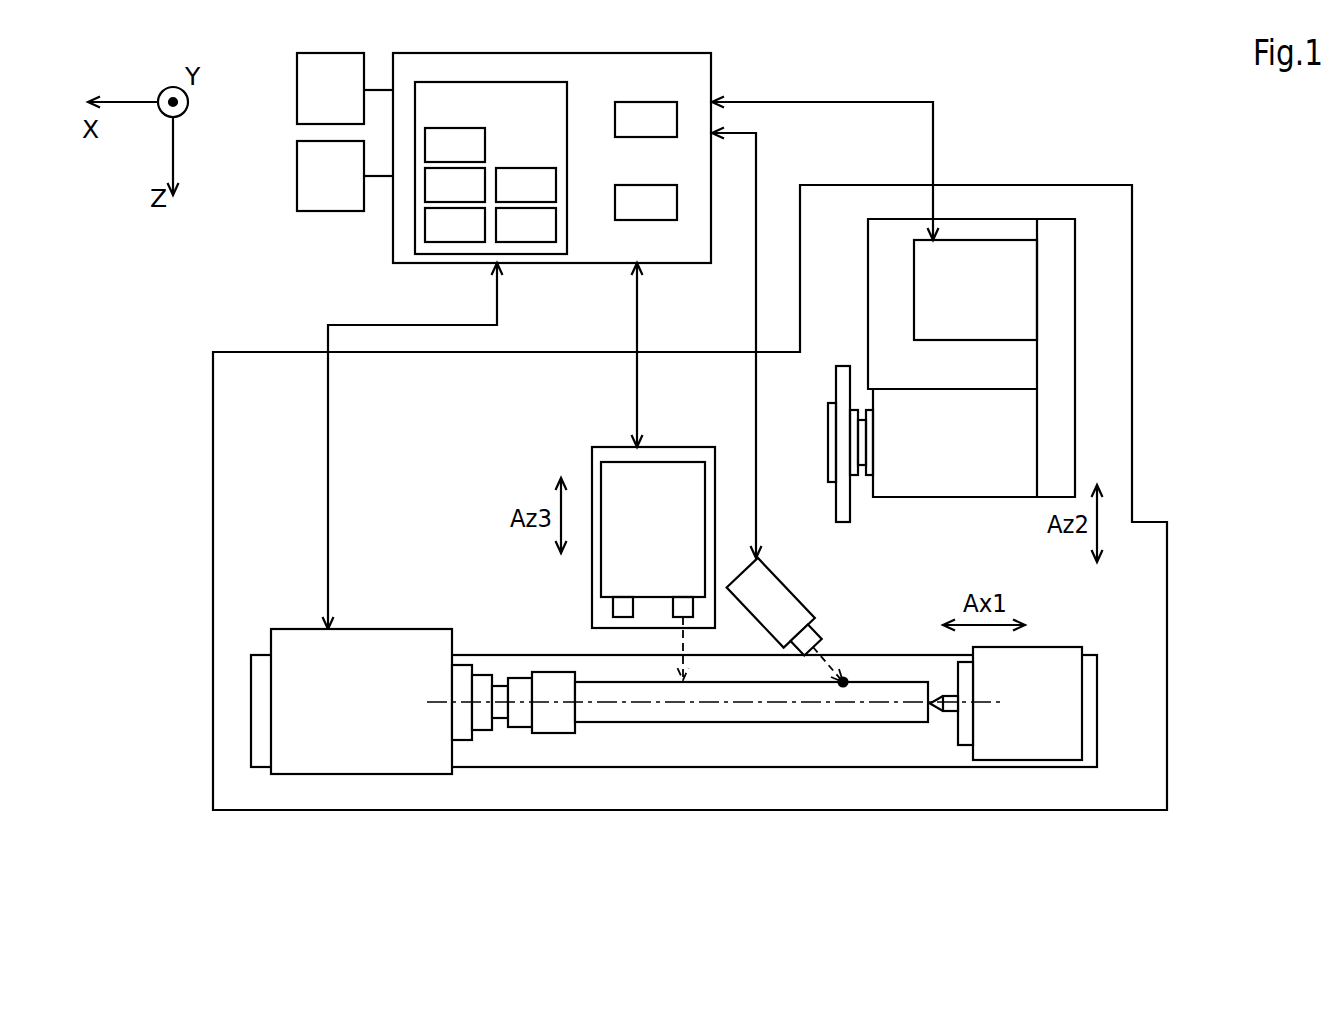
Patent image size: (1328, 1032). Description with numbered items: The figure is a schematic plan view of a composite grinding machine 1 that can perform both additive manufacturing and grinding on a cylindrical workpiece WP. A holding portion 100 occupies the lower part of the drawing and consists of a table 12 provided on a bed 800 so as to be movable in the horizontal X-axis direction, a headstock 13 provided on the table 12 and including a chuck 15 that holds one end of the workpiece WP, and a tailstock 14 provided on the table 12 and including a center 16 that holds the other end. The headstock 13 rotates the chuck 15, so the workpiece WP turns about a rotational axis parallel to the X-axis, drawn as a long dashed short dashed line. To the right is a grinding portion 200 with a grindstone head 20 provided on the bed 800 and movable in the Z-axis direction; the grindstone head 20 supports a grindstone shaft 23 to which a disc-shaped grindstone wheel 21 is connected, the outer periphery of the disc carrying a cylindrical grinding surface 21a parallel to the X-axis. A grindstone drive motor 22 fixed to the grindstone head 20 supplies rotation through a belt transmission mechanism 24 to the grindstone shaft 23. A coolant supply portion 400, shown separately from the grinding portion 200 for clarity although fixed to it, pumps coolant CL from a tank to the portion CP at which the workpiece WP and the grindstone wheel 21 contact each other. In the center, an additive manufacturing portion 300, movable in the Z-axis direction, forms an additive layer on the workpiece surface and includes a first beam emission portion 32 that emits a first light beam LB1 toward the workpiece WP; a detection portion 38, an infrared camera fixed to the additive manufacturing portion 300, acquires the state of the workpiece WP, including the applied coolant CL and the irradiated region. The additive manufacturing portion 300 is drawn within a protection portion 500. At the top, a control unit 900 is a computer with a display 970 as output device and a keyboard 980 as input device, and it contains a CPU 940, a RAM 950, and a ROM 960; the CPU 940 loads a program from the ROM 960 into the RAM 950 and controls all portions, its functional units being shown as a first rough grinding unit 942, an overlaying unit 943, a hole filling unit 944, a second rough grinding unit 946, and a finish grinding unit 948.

The composite grinding machine 1 is at (1218, 95).
The holding portion 100 is at (299, 802).
The grinding portion 200 is at (1170, 189).
The bed 800 is at (1100, 793).
The control unit 900 is at (712, 75).
The CPU 940 is at (538, 83).
The first rough grinding unit 942 is at (455, 145).
The overlaying unit 943 is at (455, 185).
The hole filling unit 944 is at (455, 225).
The second rough grinding unit 946 is at (526, 185).
The finish grinding unit 948 is at (526, 225).
The RAM 950 is at (648, 102).
The ROM 960 is at (648, 185).
The display 970 is at (345, 88).
The keyboard 980 is at (345, 176).
The table 12 is at (823, 757).
The headstock 13 is at (383, 757).
The tailstock 14 is at (1028, 745).
The chuck 15 is at (494, 733).
The center 16 is at (950, 712).
The grindstone head 20 is at (1005, 432).
The grindstone wheel 21 is at (845, 366).
The grinding surface 21a is at (843, 522).
The grindstone drive motor 22 is at (1005, 285).
The grindstone shaft 23 is at (859, 476).
The belt transmission mechanism 24 is at (1055, 350).
The additive manufacturing portion 300 is at (657, 447).
The first beam emission portion 32 is at (683, 606).
The detection portion 38 is at (622, 606).
The coolant supply portion 400 is at (780, 549).
The protection portion 500 is at (606, 431).
The workpiece WP is at (757, 712).
The contact portion CP is at (843, 678).
The coolant CL is at (822, 652).
The first light beam LB1 is at (683, 633).